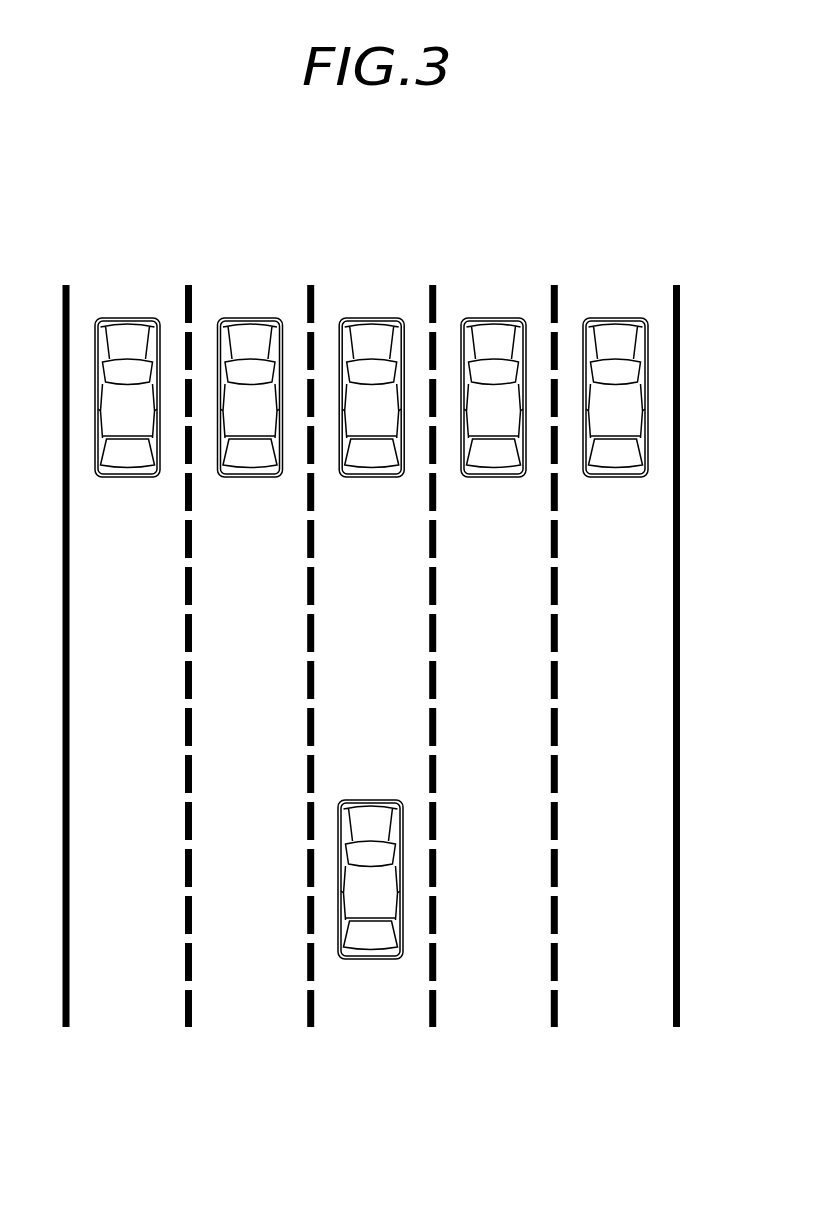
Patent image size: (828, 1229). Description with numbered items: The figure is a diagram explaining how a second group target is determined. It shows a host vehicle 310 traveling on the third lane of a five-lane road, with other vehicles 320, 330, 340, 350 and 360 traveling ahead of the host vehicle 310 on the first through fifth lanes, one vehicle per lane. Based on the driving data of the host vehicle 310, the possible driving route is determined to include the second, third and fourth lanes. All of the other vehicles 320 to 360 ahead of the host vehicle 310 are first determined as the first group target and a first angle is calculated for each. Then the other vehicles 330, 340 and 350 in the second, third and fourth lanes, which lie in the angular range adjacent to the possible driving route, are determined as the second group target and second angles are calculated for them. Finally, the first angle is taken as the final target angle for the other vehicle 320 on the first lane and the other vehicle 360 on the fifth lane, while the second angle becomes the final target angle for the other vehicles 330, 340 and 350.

The host vehicle 310 is at (370, 959).
The other vehicle 320 is at (125, 318).
The other vehicle 330 is at (247, 318).
The other vehicle 340 is at (369, 318).
The other vehicle 350 is at (491, 318).
The other vehicle 360 is at (613, 318).